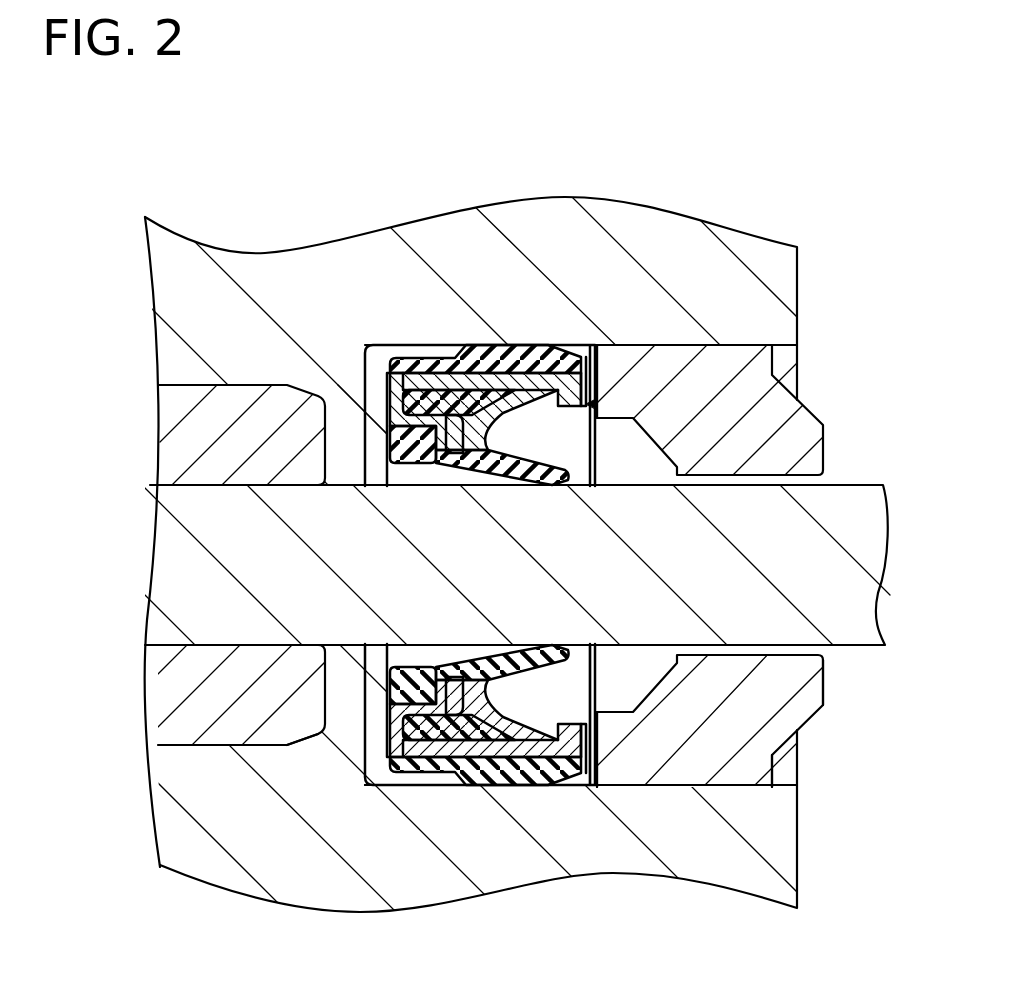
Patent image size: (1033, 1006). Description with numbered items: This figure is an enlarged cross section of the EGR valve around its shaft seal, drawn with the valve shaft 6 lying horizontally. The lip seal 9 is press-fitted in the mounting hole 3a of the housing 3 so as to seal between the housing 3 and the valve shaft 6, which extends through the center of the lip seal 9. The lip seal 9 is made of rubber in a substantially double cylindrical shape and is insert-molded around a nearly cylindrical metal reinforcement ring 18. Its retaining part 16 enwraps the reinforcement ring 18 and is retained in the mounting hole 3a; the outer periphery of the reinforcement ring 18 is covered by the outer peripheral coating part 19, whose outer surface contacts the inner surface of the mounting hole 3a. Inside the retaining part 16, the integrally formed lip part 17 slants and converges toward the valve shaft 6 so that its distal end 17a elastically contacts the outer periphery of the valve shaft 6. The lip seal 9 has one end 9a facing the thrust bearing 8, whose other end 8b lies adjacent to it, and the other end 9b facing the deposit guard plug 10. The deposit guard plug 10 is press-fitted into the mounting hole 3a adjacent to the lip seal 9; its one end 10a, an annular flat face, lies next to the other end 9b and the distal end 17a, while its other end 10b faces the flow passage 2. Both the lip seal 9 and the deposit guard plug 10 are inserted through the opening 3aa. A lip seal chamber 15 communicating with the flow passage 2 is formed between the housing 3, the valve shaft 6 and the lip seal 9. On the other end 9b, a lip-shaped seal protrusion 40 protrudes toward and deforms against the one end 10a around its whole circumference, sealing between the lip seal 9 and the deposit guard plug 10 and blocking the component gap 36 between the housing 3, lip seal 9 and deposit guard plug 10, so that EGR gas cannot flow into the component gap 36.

The flow passage 2 is at (852, 363).
The housing 3 is at (173, 806).
The mounting hole 3a is at (365, 786).
The opening 3aa is at (775, 787).
The valve shaft 6 is at (187, 568).
The thrust bearing 8 is at (172, 427).
The other end of the thrust bearing 8b is at (368, 776).
The lip seal 9 is at (418, 362).
The one end of the lip seal 9a is at (343, 385).
The other end of the lip seal 9b is at (597, 403).
The deposit guard plug 10 is at (698, 365).
The one end of the deposit guard plug 10a is at (567, 700).
The other end of the deposit guard plug 10b is at (825, 676).
The lip seal chamber 15 is at (572, 783).
The retaining part 16 is at (467, 395).
The lip part 17 is at (502, 448).
The distal end of the lip part 17a is at (563, 470).
The reinforcement ring 18 is at (445, 378).
The outer peripheral coating part 19 is at (481, 773).
The component gap 36 is at (583, 772).
The seal protrusion 40 is at (596, 405).